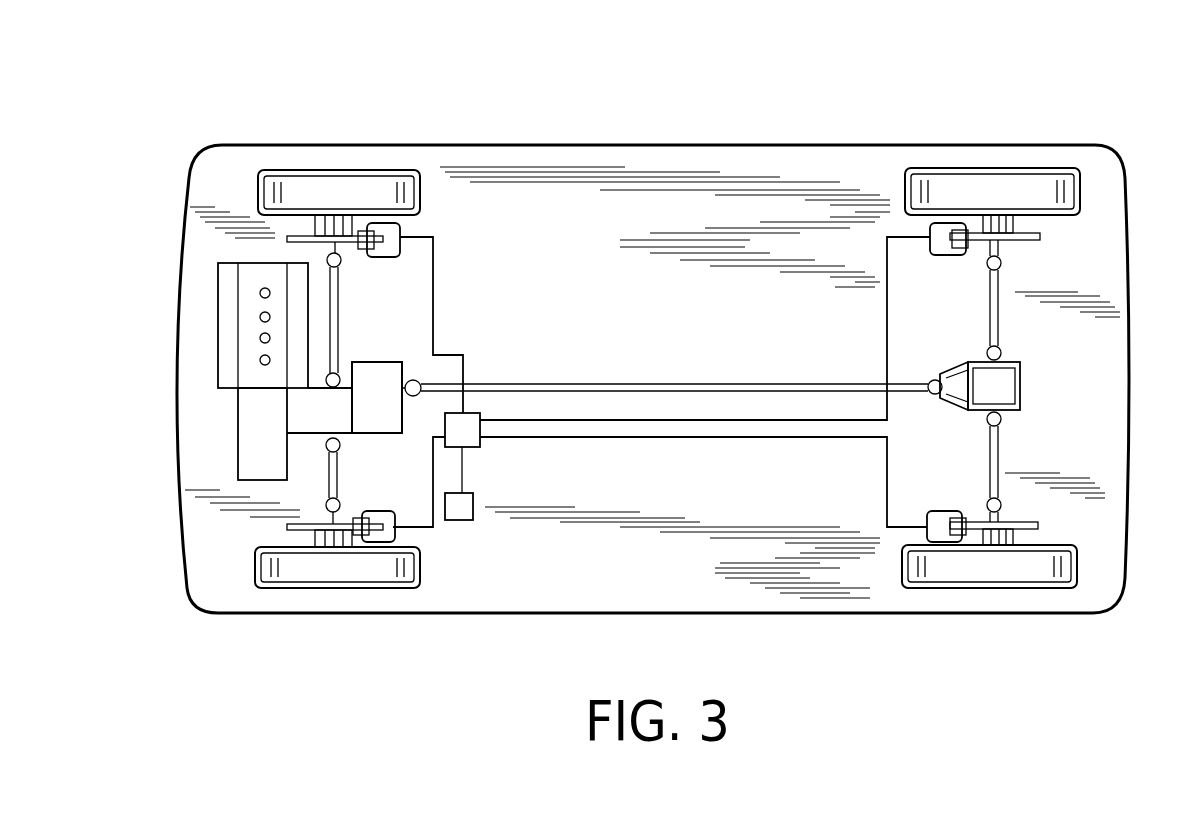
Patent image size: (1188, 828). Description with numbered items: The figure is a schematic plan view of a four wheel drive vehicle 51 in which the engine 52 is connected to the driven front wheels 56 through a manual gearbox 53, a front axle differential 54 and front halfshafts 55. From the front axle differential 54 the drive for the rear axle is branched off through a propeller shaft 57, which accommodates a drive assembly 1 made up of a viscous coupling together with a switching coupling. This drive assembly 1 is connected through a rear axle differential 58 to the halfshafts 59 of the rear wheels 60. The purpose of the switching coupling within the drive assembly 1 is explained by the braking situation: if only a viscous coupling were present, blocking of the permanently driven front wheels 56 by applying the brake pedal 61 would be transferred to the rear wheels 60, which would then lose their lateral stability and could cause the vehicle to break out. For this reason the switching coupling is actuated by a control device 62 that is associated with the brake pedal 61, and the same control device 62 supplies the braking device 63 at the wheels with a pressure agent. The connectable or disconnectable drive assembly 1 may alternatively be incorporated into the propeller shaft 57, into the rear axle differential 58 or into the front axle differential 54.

The drive assembly 1 is at (384, 364).
The four wheel drive vehicle 51 is at (672, 108).
The engine 52 is at (228, 292).
The manual gearbox 53 is at (243, 408).
The front axle differential 54 is at (310, 430).
The front halfshafts 55 is at (331, 262).
The front wheels 56 is at (285, 180).
The propeller shaft 57 is at (658, 388).
The rear axle differential 58 is at (1013, 386).
The halfshafts 59 is at (997, 287).
The rear wheels 60 is at (1003, 176).
The brake pedal 61 is at (463, 520).
The control device 62 is at (478, 447).
The braking device 63 is at (398, 232).